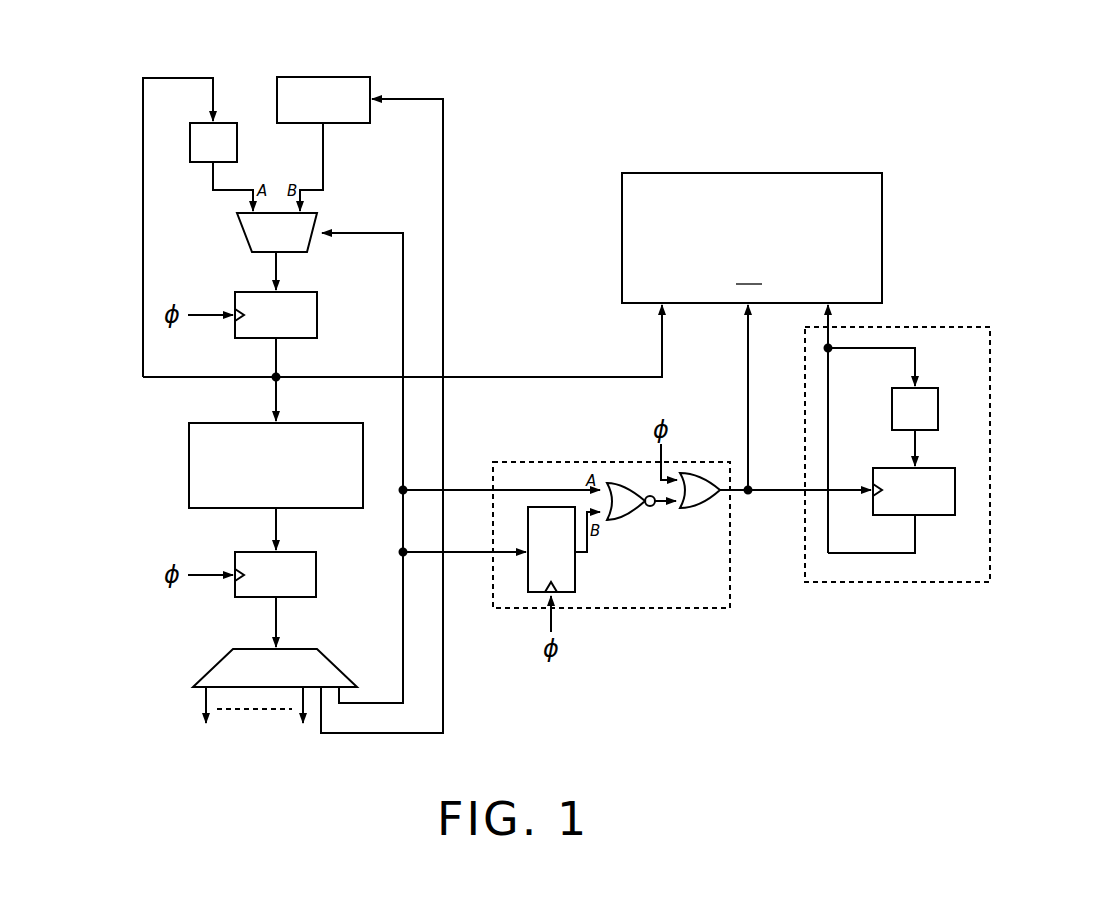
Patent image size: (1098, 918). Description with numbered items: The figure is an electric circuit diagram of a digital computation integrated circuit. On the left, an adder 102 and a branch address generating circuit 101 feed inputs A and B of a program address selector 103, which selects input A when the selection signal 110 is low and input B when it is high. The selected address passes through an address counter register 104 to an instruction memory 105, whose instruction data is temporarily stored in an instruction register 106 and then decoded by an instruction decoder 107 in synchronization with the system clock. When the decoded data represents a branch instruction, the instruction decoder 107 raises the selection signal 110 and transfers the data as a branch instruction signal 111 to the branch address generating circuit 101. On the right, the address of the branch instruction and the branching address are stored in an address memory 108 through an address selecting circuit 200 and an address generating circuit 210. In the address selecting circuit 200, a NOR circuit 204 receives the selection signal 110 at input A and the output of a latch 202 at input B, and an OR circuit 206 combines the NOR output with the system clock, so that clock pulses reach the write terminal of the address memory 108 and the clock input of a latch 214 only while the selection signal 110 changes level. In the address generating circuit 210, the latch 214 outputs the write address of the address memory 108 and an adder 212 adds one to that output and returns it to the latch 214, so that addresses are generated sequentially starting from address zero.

The branch address generating circuit 101 is at (340, 77).
The adder 102 is at (190, 153).
The program address selector 103 is at (237, 238).
The address counter register 104 is at (235, 300).
The instruction memory 105 is at (189, 465).
The instruction register 106 is at (235, 555).
The instruction decoder 107 is at (219, 663).
The address memory 108 is at (794, 173).
The selection signal 110 is at (403, 664).
The branch instruction signal 111 is at (443, 704).
The address selecting circuit 200 is at (730, 609).
The latch 202 is at (527, 597).
The NOR circuit 204 is at (613, 481).
The OR circuit 206 is at (696, 474).
The address generating circuit 210 is at (990, 327).
The adder 212 is at (938, 405).
The latch 214 is at (955, 481).